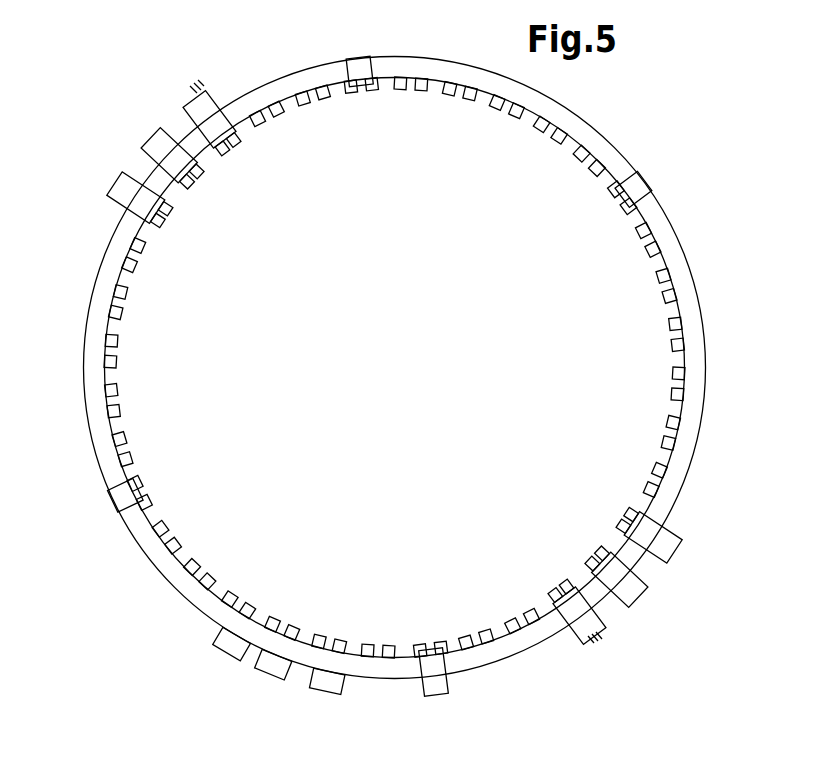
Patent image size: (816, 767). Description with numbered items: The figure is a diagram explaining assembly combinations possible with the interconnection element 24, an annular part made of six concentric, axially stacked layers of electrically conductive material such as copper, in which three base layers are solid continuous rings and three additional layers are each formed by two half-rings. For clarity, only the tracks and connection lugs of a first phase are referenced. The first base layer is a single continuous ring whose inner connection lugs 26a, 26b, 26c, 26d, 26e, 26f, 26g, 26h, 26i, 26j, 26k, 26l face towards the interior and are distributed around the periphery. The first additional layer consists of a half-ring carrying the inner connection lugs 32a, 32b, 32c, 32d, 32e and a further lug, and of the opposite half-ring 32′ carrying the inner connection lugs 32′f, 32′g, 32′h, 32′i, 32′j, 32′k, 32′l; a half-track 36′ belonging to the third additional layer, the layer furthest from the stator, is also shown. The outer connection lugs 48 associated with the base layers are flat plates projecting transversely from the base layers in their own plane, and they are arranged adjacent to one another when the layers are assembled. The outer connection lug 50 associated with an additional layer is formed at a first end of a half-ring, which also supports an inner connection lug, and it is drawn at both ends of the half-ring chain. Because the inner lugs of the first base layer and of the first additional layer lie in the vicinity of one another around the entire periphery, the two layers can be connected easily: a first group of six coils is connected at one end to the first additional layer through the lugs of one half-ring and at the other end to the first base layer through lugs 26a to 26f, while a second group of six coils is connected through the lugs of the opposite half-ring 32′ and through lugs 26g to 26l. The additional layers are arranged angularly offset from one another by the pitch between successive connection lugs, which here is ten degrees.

The interconnection element 24 is at (747, 493).
The inner connection lug of the first base layer 26a is at (567, 588).
The inner connection lug of the first base layer 26b is at (658, 473).
The inner connection lug of the first base layer 26c is at (672, 331).
The inner connection lug of the first base layer 26d is at (638, 184).
The inner connection lug of the first base layer 26e is at (494, 104).
The inner connection lug of the first base layer 26f is at (350, 62).
The inner connection lug of the first base layer 26g is at (226, 149).
The inner connection lug of the first base layer 26h is at (123, 252).
The inner connection lug of the first base layer 26i is at (123, 415).
The inner connection lug of the first base layer 26j is at (115, 514).
The inner connection lug of the first base layer 26k is at (298, 630).
The inner connection lug of the first base layer 26l is at (446, 674).
The inner connection lug of half-ring 32 32a is at (553, 594).
The inner connection lug of half-ring 32 32b is at (655, 490).
The inner connection lug of half-ring 32 32c is at (673, 348).
The inner connection lug of half-ring 32 32d is at (648, 194).
The inner connection lug of half-ring 32 32e is at (508, 117).
The opposite half-ring of the first additional layer 32′ is at (185, 122).
The spacer 32′f is at (372, 62).
The inner connection lug of opposite half-ring 32′ 32′g is at (242, 140).
The inner connection lug of opposite half-ring 32′ 32′h is at (141, 250).
The inner connection lug of opposite half-ring 32′ 32′i is at (122, 388).
The inner connection lug of opposite half-ring 32′ 32′j is at (110, 496).
The inner connection lug of opposite half-ring 32′ 32′k is at (278, 624).
The inner connection lug of opposite half-ring 32′ 32′l is at (433, 697).
The half-track of the third additional layer 36′ is at (113, 226).
The outer connection lugs of the base layers 48 is at (233, 678).
The outer connection lug of an additional layer 50 is at (195, 90).